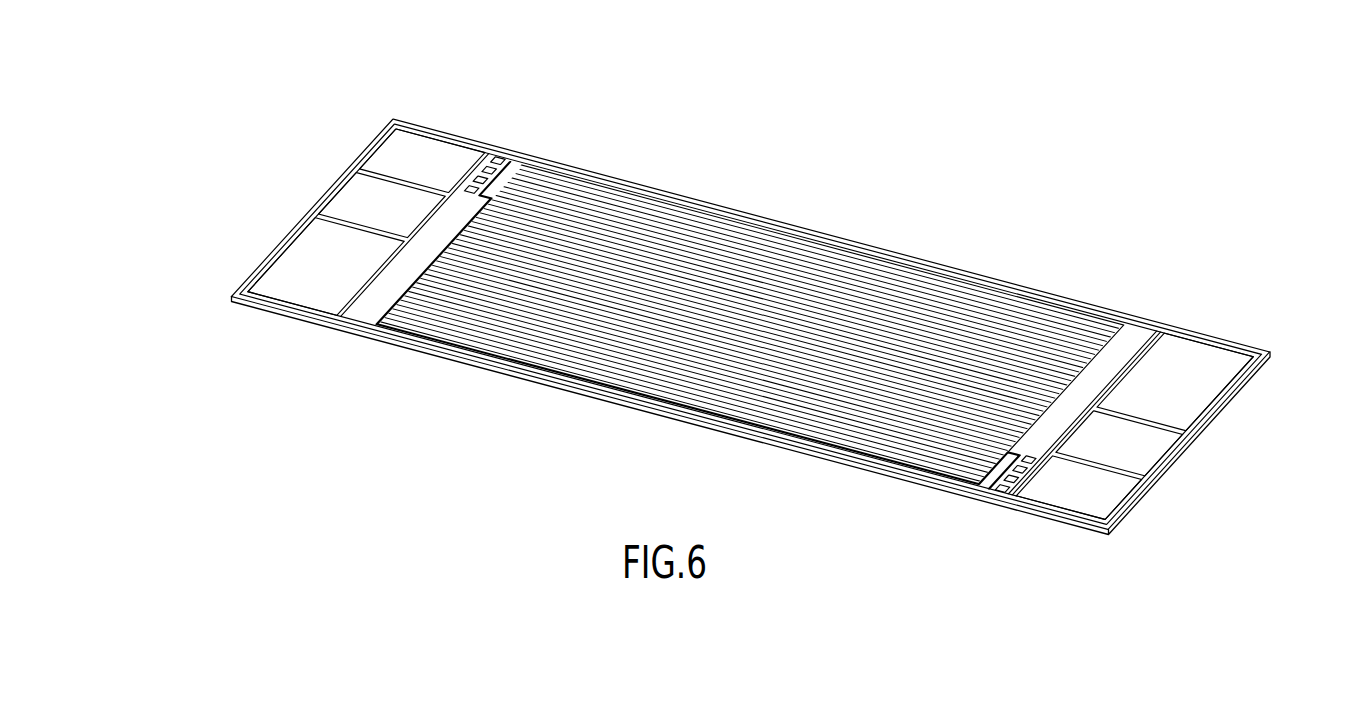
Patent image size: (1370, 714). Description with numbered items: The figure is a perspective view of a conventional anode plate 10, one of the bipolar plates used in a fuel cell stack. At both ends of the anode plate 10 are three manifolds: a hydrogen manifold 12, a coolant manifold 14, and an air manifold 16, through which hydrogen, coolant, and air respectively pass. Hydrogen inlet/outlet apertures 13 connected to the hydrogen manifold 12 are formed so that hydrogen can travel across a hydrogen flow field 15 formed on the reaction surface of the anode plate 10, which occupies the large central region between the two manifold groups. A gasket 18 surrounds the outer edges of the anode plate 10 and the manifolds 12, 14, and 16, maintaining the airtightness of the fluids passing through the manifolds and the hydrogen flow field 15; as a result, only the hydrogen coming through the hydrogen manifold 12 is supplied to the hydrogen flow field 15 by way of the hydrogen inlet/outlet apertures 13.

The anode plate 10 is at (390, 351).
The hydrogen manifold 12 is at (403, 162).
The hydrogen inlet/outlet apertures 13 is at (497, 150).
The coolant manifold 14 is at (363, 203).
The hydrogen flow field 15 is at (790, 302).
The air manifold 16 is at (318, 264).
The gasket 18 is at (1147, 320).